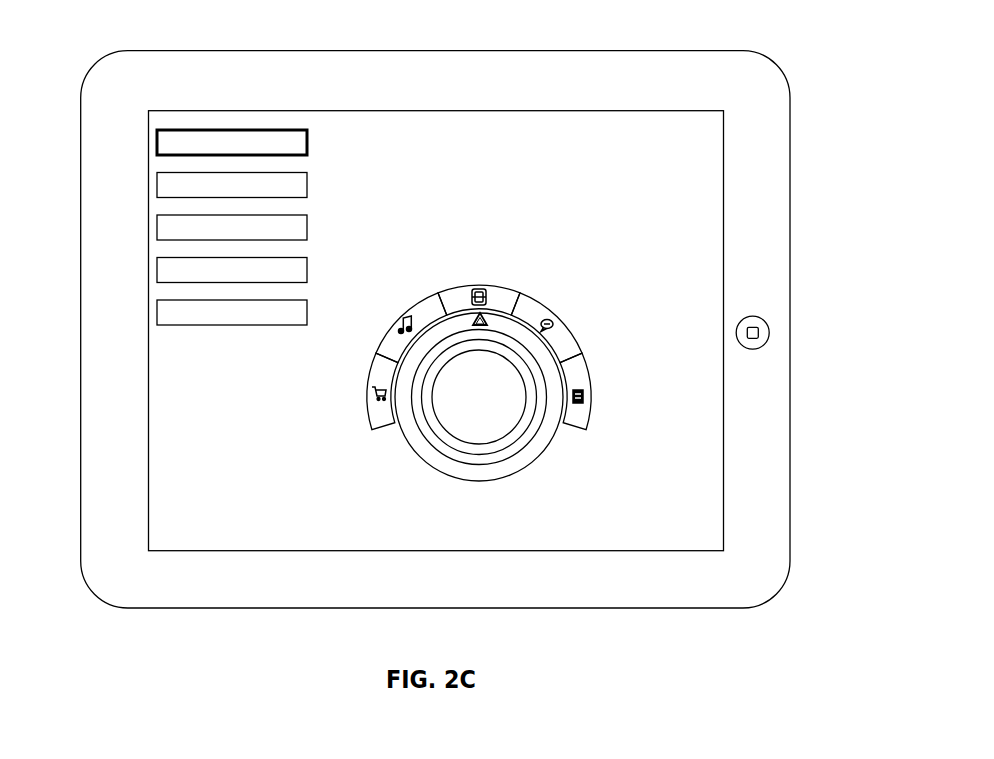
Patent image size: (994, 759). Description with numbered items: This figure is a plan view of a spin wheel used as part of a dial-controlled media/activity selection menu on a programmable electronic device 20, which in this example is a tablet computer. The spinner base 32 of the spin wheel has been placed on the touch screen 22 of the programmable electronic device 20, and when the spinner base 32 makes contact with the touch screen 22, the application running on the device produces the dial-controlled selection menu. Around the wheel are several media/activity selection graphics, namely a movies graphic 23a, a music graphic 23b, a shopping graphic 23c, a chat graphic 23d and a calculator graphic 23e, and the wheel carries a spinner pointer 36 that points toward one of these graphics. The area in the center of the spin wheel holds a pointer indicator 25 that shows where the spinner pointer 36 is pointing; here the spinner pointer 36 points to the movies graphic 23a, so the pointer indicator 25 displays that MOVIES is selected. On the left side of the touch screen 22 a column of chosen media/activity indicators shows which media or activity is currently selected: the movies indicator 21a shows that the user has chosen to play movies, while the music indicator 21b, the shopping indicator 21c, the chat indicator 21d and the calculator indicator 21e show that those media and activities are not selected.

The programmable electronic device 20 is at (452, 51).
The touch screen 22 is at (610, 143).
The movies indicator 21a is at (157, 137).
The music indicator 21b is at (157, 181).
The shopping indicator 21c is at (157, 227).
The chat indicator 21d is at (157, 268).
The calculator indicator 21e is at (157, 311).
The movies graphic 23a is at (463, 283).
The music graphic 23b is at (420, 303).
The shopping graphic 23c is at (367, 381).
The chat graphic 23d is at (537, 303).
The calculator graphic 23e is at (591, 390).
The pointer indicator 25 is at (498, 423).
The spinner base 32 is at (421, 455).
The spinner pointer 36 is at (488, 316).